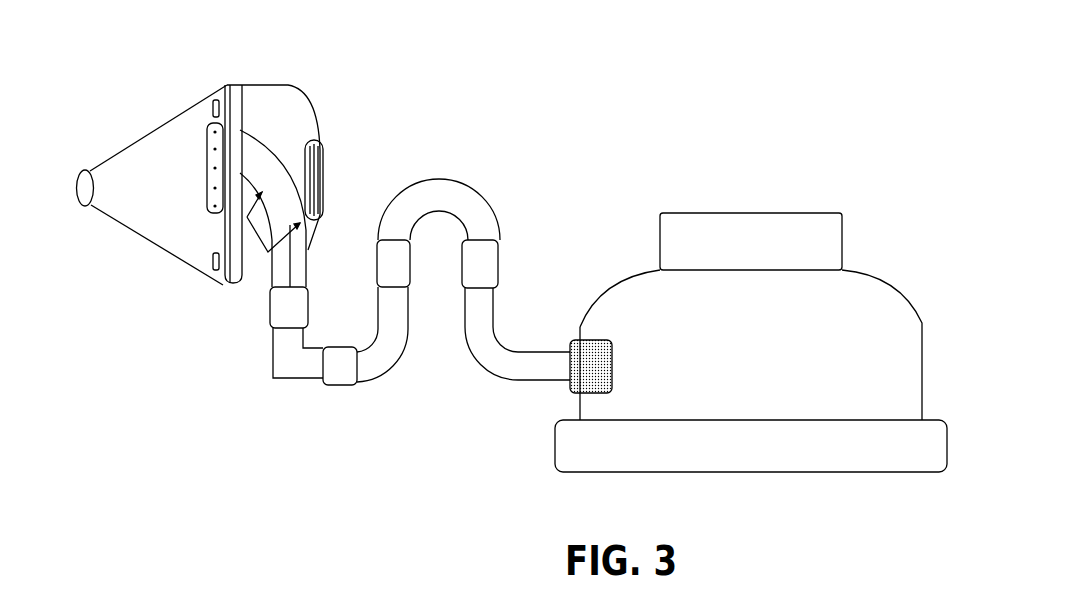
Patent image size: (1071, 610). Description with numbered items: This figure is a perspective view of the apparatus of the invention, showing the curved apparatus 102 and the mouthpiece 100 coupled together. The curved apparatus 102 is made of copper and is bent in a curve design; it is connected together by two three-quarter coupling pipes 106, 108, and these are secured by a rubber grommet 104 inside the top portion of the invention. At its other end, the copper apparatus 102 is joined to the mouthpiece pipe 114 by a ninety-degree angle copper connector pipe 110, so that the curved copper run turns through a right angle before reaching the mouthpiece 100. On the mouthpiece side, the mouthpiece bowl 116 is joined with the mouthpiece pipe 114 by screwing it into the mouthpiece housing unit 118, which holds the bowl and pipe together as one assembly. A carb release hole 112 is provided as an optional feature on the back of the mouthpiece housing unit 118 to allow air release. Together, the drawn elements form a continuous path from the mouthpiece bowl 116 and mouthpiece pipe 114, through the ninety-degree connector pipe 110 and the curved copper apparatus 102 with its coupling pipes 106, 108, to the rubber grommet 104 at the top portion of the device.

The mouthpiece 100 is at (558, 103).
The curved apparatus 102 is at (550, 352).
The rubber grommet 104 is at (582, 343).
The coupling pipe 106 is at (495, 247).
The coupling pipe 108 is at (378, 242).
The 90 degree angle copper connector pipe 110 is at (308, 386).
The carb release hole 112 is at (307, 155).
The mouthpiece pipe 114 is at (207, 147).
The mouthpiece bowl 116 is at (145, 238).
The mouthpiece housing unit 118 is at (258, 85).